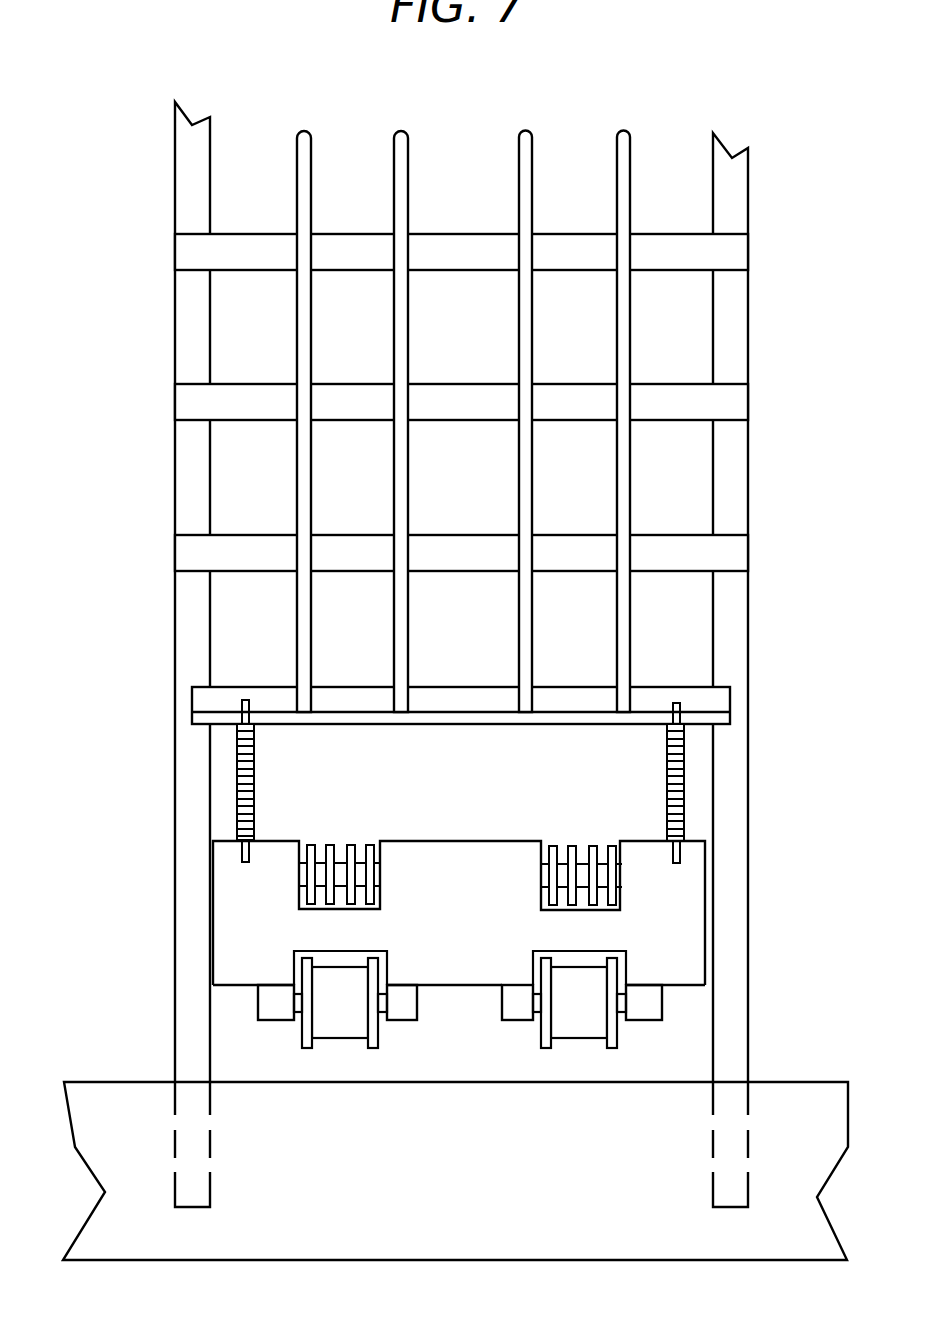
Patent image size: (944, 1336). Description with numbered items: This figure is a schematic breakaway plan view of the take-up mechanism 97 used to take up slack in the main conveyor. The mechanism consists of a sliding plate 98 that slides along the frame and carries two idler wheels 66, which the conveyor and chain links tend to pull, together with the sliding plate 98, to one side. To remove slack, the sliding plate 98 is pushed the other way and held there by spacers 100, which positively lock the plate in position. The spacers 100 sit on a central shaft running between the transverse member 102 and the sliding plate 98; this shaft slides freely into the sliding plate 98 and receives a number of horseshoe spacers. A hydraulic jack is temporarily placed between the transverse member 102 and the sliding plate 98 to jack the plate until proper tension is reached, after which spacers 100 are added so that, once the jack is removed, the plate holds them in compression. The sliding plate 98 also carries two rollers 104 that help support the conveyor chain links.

The take-up mechanism 97 is at (762, 823).
The sliding plate 98 is at (483, 932).
The spacers 100 is at (255, 747).
The transverse member 102 is at (490, 725).
The rollers 104 is at (330, 845).
The idler wheels 66 is at (359, 1015).